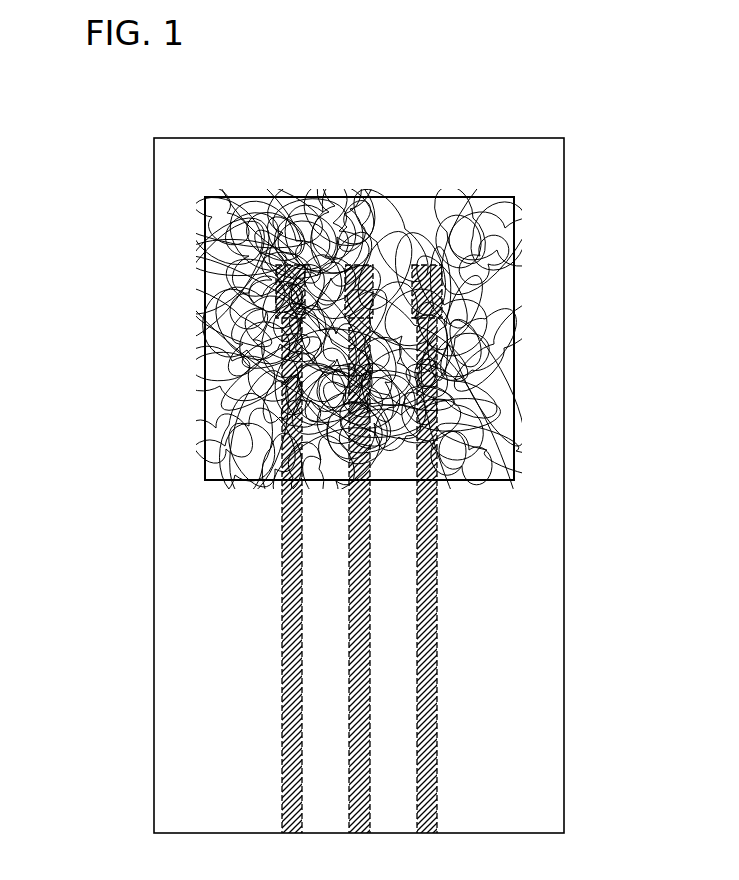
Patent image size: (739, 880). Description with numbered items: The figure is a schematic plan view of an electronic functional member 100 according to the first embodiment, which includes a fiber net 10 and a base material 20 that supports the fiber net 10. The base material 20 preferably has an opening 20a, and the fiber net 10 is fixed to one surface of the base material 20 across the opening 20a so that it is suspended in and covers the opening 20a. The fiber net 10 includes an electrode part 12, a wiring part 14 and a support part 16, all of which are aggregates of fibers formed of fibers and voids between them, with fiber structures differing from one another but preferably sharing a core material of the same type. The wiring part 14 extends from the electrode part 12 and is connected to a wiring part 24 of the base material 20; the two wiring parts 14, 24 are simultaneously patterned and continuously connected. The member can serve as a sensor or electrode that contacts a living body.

The electronic functional member 100 is at (656, 108).
The fiber net 10 is at (403, 366).
The electrode part 12 is at (422, 266).
The wiring part 14 is at (303, 463).
The support part 16 is at (505, 288).
The base material 20 is at (525, 540).
The opening 20a is at (210, 392).
The wiring part 24 is at (302, 752).